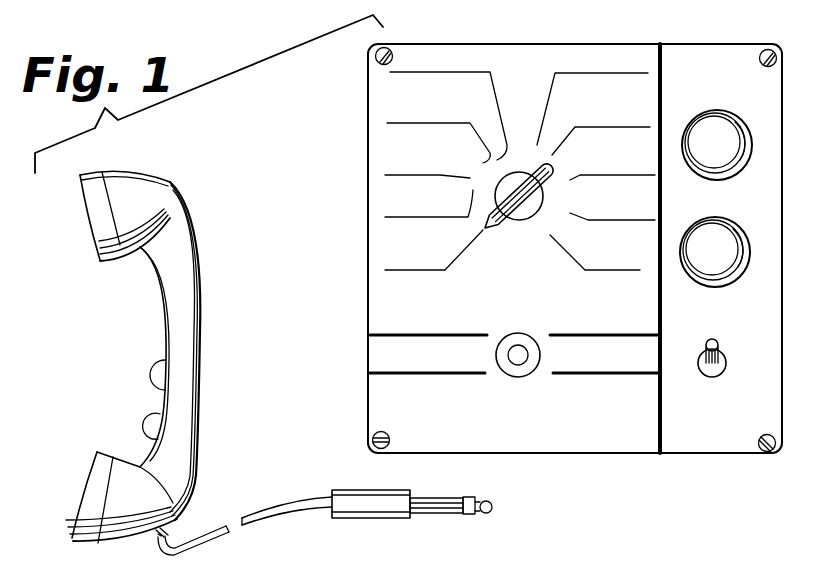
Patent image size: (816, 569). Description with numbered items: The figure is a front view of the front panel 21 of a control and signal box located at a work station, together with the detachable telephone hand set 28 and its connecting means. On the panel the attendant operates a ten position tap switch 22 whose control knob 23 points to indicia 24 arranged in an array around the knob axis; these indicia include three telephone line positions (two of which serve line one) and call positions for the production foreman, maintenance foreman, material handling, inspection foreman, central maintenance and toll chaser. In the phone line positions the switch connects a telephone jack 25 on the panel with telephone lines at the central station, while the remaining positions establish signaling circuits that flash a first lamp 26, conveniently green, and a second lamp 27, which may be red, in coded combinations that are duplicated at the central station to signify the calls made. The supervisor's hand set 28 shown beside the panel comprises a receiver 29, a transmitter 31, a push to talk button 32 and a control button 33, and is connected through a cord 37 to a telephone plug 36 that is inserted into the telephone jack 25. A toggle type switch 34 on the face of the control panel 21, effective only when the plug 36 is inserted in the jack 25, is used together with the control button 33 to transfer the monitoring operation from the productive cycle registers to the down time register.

The front panel 21 is at (387, 319).
The ten position tap switch 22 is at (520, 60).
The control knob 23 is at (509, 216).
The indicia 24 is at (470, 178).
The telephone jack 25 is at (520, 346).
The first lamp 26 is at (730, 137).
The second lamp 27 is at (726, 242).
The hand set 28 is at (176, 316).
The receiver 29 is at (97, 234).
The transmitter 31 is at (74, 490).
The push to talk button 32 is at (148, 372).
The control button 33 is at (150, 422).
The toggle type switch 34 is at (722, 353).
The telephone plug 36 is at (375, 516).
The cord 37 is at (270, 521).